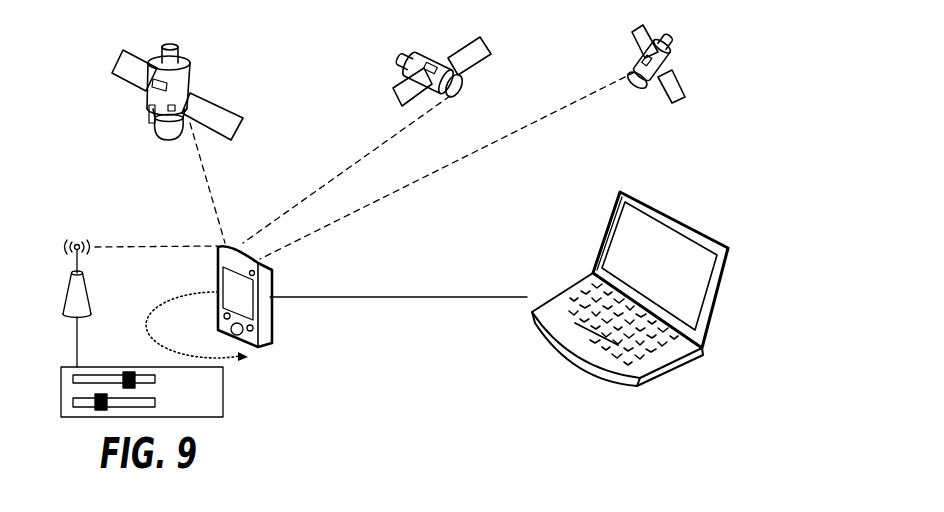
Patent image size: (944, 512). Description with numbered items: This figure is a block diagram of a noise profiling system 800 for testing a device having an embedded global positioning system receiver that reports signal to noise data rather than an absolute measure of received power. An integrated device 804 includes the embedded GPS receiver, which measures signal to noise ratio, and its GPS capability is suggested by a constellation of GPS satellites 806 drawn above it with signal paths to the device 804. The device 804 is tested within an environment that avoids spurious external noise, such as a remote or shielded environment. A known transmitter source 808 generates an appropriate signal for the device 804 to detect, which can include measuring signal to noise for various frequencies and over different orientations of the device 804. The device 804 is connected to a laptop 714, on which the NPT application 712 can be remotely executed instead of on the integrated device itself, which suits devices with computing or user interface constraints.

The noise profiling system 800 is at (735, 91).
The constellation of GPS satellites 806 is at (453, 200).
The integrated device 804 is at (270, 262).
The transmitter source 808 is at (218, 405).
The NPT application 712 is at (620, 191).
The laptop 714 is at (673, 242).